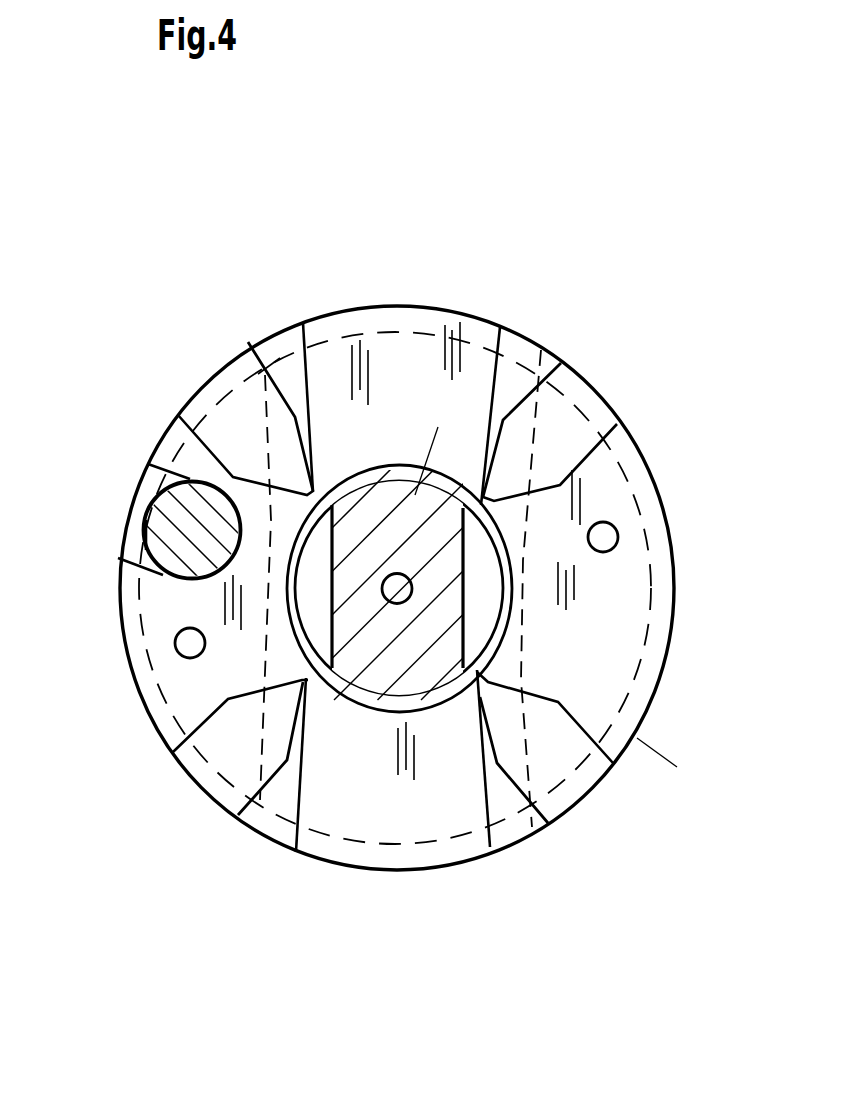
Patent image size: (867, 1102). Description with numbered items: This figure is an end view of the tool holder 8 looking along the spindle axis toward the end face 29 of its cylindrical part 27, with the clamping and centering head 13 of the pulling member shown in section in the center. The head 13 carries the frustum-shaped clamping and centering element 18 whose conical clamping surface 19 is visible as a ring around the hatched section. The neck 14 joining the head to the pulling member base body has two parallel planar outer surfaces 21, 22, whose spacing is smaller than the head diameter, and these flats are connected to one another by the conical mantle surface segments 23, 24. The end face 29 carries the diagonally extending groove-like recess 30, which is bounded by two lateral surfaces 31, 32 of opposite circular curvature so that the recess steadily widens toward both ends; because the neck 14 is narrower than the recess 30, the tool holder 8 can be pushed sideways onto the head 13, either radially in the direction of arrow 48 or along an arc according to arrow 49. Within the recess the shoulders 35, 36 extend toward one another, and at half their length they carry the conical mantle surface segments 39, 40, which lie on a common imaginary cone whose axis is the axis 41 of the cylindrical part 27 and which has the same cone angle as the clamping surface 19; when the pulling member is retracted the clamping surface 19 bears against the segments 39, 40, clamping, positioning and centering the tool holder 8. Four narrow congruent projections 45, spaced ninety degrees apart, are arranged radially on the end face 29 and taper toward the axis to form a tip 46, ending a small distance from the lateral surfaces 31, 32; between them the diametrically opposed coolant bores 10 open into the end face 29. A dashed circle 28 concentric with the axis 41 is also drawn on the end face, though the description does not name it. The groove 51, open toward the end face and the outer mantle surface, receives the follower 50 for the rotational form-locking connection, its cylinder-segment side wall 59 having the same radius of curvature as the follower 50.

The tool holder 8 is at (278, 330).
The coolant bores 10 is at (603, 532).
The clamping and centering head 13 is at (436, 517).
The neck 14 is at (447, 624).
The clamping and centering element 18 is at (477, 550).
The clamping surface 19 is at (372, 475).
The planar outer surface 21 is at (332, 616).
The planar outer surface 22 is at (467, 574).
The conical mantle surface segment 23 is at (431, 441).
The conical mantle surface segment 24 is at (395, 693).
The cylindrical part 27 is at (670, 770).
The pitch circle 28 is at (130, 611).
The end face 29 is at (615, 678).
The recess 30 is at (447, 840).
The lateral surface 31 is at (308, 360).
The lateral surface 32 is at (487, 365).
The shoulder 35 is at (247, 340).
The shoulder 36 is at (505, 642).
The conical mantle surface segment 39 is at (262, 776).
The conical mantle surface segment 40 is at (490, 655).
The axis 41 is at (397, 592).
The projections 45 is at (222, 427).
The tip 46 is at (297, 470).
The arrow 48 is at (400, 150).
The arrow 49 is at (447, 175).
The follower 50 is at (178, 528).
The groove 51 is at (152, 484).
The side wall 59 is at (391, 588).